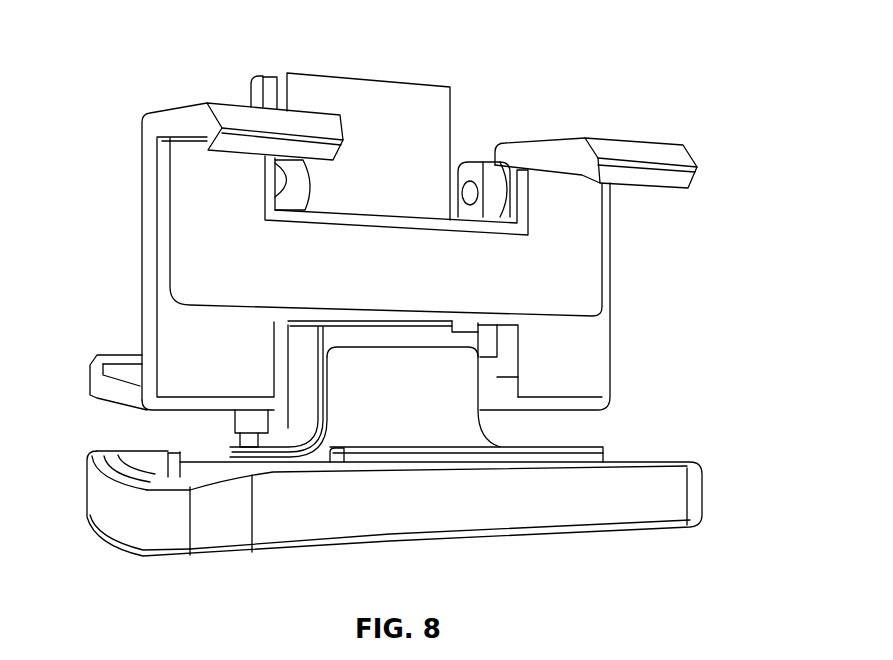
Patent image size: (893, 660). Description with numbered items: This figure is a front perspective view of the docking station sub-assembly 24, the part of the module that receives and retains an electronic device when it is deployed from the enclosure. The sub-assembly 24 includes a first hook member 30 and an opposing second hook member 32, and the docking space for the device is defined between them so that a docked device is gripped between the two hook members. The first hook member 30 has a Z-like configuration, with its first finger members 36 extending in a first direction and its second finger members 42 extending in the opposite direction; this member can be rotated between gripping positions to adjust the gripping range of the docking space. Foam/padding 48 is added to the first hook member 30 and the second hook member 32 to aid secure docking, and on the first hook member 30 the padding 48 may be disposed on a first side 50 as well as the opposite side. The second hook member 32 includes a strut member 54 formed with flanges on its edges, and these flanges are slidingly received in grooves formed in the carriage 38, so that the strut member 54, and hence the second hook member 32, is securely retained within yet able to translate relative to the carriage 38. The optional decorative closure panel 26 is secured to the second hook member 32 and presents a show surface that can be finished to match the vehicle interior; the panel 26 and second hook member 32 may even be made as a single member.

The docking station sub-assembly 24 is at (674, 105).
The decorative closure panel 26 is at (147, 553).
The first hook member 30 is at (145, 190).
The second hook member 32 is at (362, 460).
The first finger members 36 is at (692, 155).
The carriage 38 is at (257, 93).
The second finger members 42 is at (113, 383).
The foam/padding 48 is at (590, 243).
The first side 50 is at (590, 348).
The strut member 54 is at (437, 107).